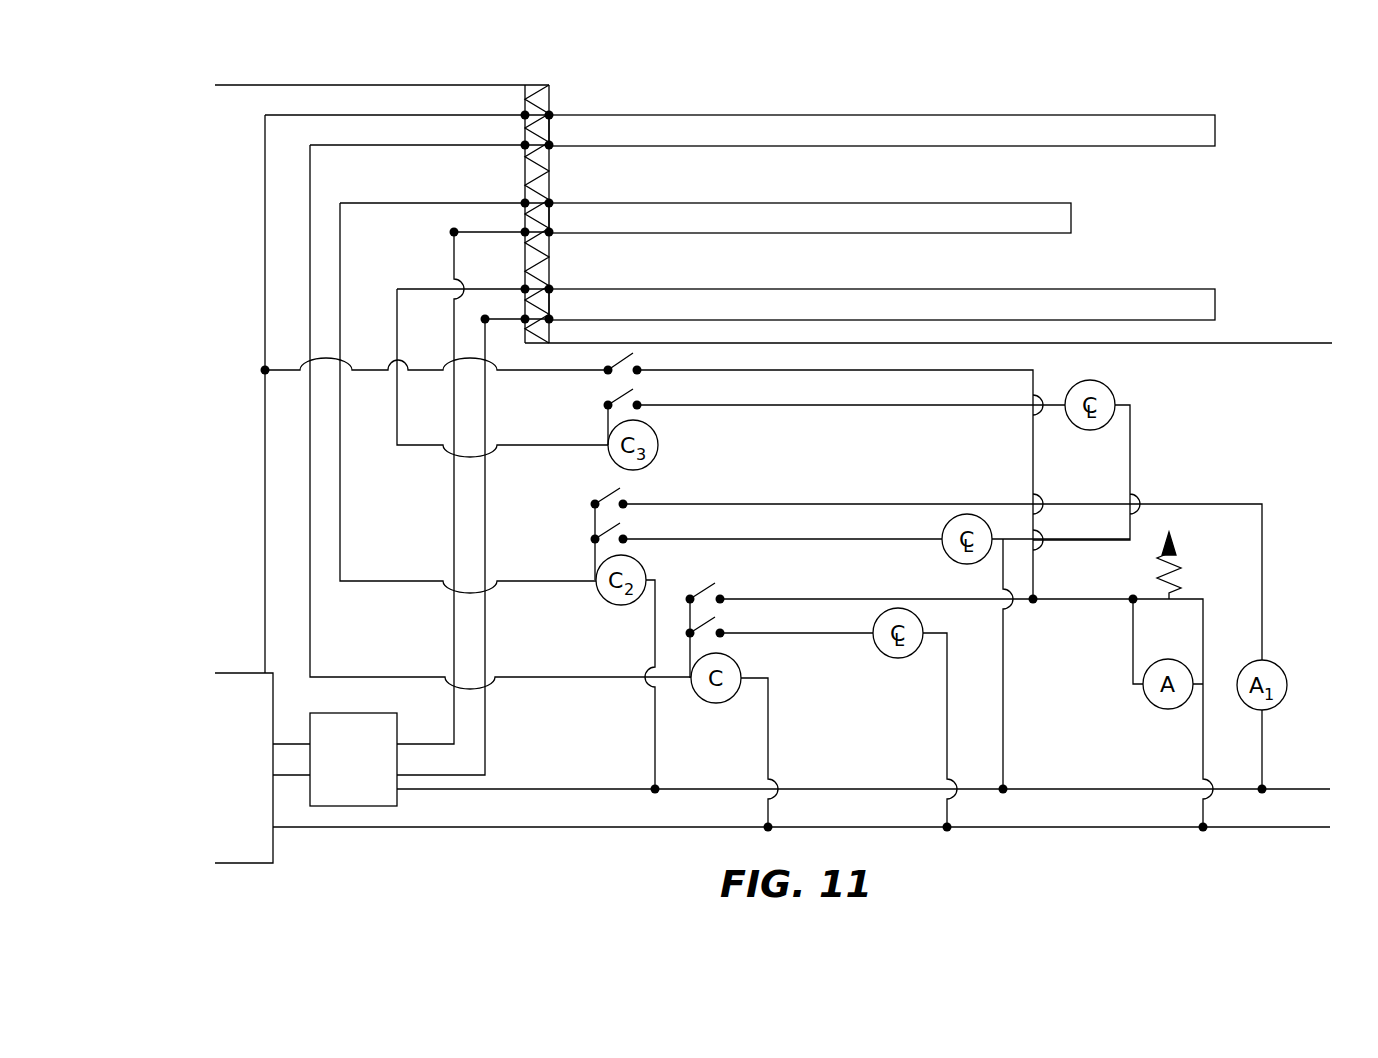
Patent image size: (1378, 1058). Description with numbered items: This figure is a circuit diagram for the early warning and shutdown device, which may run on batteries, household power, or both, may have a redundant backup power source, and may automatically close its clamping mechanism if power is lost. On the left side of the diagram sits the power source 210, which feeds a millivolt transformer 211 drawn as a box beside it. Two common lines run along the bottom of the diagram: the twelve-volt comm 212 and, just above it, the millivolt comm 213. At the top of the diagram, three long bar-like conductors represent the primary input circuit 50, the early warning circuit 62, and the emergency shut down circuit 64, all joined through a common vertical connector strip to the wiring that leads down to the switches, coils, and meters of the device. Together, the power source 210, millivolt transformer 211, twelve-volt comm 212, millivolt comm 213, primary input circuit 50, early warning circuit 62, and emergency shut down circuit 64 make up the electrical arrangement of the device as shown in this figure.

The primary input circuit 50 is at (1172, 147).
The early warning circuit 62 is at (1071, 218).
The emergency shut down circuit 64 is at (1173, 288).
The power source 210 is at (262, 778).
The millivolt transformer 211 is at (375, 778).
The 12 v comm 212 is at (950, 830).
The millivolt comm 213 is at (1303, 789).